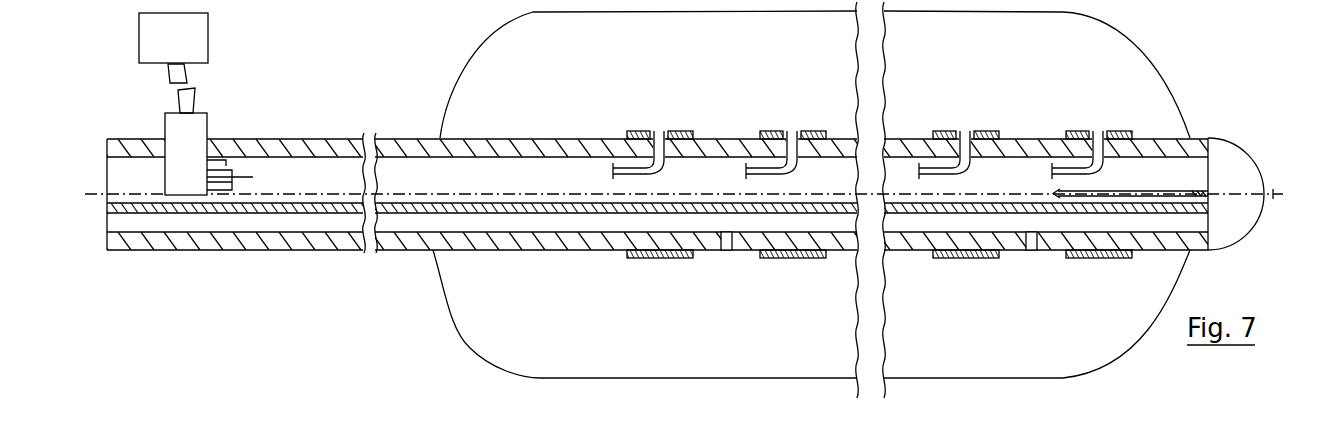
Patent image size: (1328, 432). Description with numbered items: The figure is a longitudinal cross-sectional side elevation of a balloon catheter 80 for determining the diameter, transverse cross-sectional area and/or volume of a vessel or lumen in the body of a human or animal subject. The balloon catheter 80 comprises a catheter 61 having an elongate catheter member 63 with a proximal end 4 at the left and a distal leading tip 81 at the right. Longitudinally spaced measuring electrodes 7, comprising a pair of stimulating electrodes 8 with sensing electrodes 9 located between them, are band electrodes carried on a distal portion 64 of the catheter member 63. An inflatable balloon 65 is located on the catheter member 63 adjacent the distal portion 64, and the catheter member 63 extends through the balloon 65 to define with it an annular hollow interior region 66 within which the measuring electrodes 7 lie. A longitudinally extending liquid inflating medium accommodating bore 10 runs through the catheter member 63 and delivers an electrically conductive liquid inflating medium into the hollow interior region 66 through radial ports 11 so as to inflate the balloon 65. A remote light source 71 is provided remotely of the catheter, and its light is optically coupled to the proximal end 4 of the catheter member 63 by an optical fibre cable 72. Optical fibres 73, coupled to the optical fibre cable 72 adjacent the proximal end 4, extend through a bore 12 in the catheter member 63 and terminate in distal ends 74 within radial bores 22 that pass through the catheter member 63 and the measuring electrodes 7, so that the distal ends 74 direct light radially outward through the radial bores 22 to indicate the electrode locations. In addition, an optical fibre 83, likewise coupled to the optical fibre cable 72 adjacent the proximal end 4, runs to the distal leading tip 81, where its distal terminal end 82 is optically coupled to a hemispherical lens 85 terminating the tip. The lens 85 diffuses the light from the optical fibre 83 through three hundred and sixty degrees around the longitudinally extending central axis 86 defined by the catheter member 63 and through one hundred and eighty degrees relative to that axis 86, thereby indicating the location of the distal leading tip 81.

The proximal end 4 is at (108, 145).
The measuring electrodes 7 is at (654, 258).
The stimulating electrodes 8 is at (687, 131).
The sensing electrodes 9 is at (820, 131).
The liquid inflating medium accommodating bore 10 is at (276, 226).
The radial ports 11 is at (727, 252).
The bore 12 is at (303, 182).
The radial bores 22 is at (643, 131).
The catheter 61 is at (378, 251).
The catheter member 63 is at (422, 251).
The distal portion 64 is at (914, 244).
The inflatable balloon 65 is at (1144, 45).
The annular hollow interior region 66 is at (1076, 56).
The remote light source 71 is at (197, 28).
The optical fibre cable 72 is at (188, 70).
The optical fibres 73 is at (213, 160).
The distal ends 74 is at (661, 131).
The balloon catheter 80 is at (456, 334).
The distal leading tip 81 is at (1207, 138).
The distal terminal end 82 is at (1212, 190).
The optical fibre 83 is at (1150, 200).
The hemispherical lens 85 is at (1226, 236).
The longitudinally extending central axis 86 is at (93, 197).